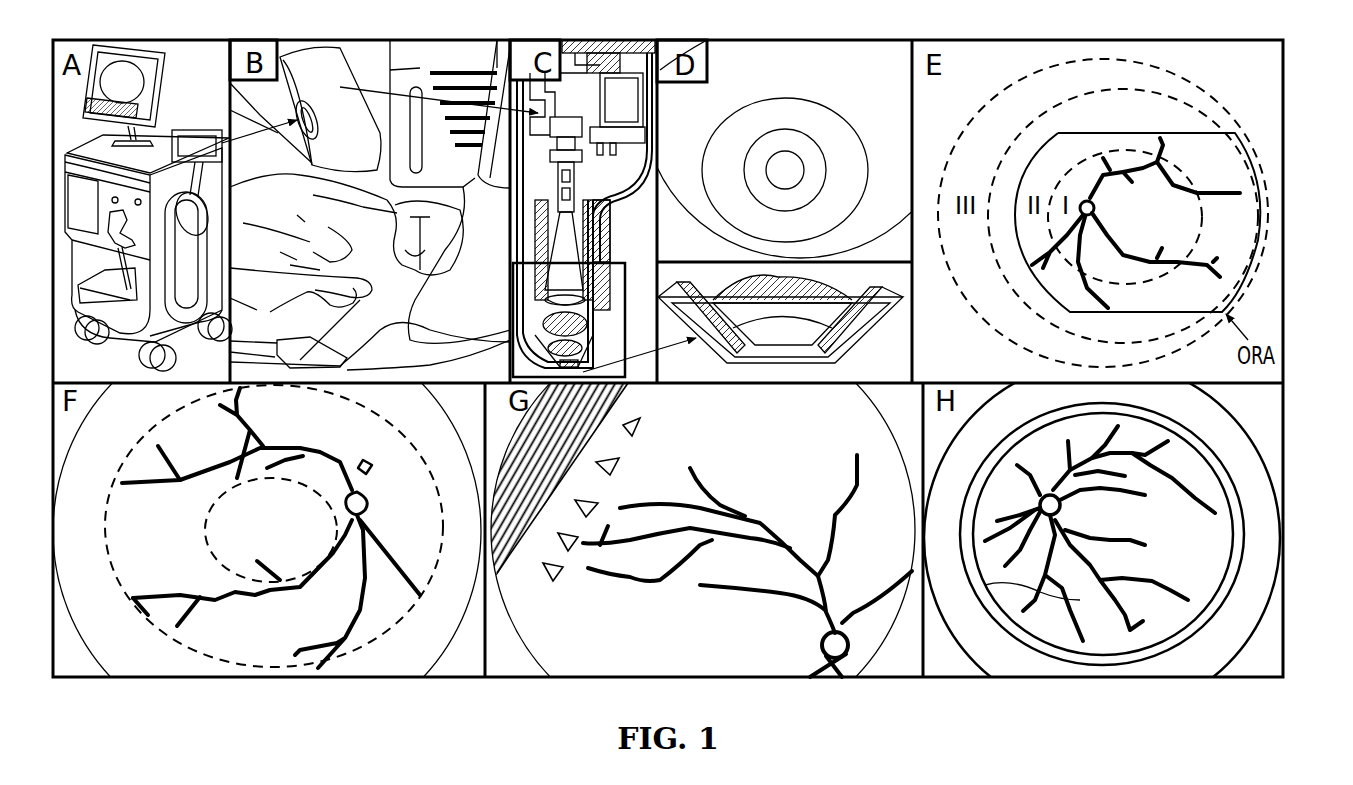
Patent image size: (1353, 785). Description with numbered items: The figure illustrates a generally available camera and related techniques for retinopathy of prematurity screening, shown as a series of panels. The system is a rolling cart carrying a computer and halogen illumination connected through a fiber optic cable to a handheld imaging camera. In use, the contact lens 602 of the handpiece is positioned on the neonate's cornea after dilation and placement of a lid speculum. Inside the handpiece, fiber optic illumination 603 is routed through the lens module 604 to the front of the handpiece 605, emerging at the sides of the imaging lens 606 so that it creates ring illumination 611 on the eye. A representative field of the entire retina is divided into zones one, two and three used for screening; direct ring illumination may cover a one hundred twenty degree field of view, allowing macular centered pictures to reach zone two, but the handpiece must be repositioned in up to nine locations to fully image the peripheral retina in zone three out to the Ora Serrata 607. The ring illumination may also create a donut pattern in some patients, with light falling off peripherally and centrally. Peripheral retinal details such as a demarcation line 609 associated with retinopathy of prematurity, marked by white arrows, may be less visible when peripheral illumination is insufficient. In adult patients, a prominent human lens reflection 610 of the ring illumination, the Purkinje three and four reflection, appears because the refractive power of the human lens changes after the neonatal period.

The contact lens 602 is at (190, 146).
The fiber optic illumination 603 is at (903, 297).
The lens module 604 is at (622, 280).
The front of the handpiece 605 is at (595, 348).
The imaging lens 606 is at (788, 270).
The Ora Serrata 607 is at (1258, 153).
The demarcation line 609 is at (607, 435).
The human lens reflection 610 is at (1049, 599).
The ring illumination 611 is at (790, 145).